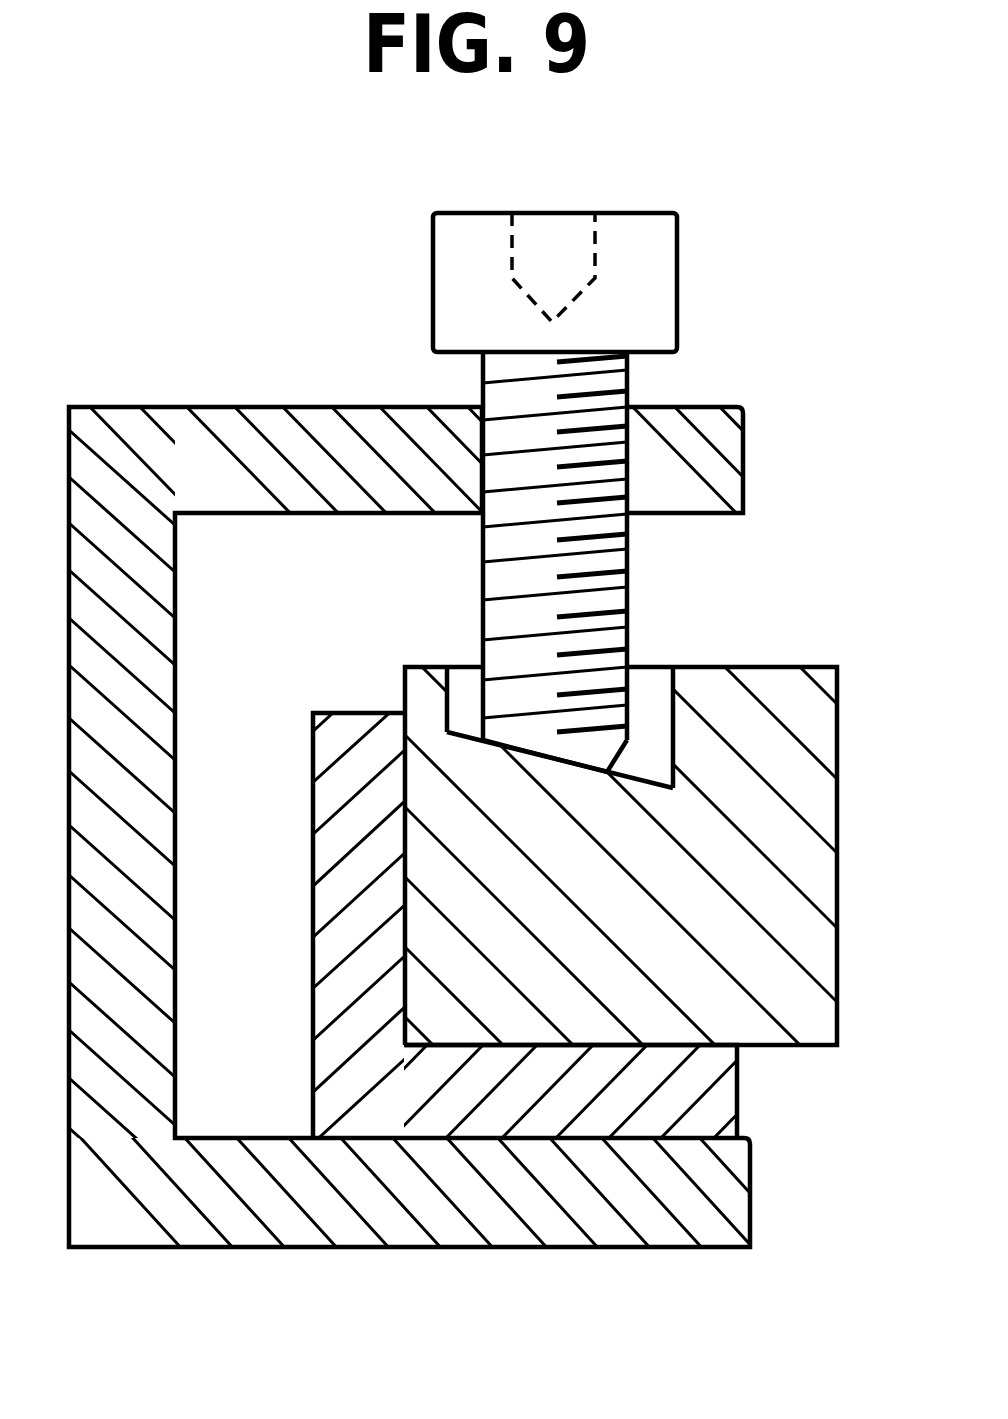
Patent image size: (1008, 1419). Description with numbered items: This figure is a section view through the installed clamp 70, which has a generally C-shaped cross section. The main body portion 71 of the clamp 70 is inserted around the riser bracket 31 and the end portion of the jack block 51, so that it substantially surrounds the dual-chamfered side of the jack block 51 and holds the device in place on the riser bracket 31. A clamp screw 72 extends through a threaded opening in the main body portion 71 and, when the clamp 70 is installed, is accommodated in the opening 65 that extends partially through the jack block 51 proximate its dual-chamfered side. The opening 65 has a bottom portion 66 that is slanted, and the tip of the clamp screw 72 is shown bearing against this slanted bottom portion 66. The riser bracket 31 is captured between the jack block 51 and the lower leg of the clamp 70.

The clamp 70 is at (230, 362).
The main body portion 71 is at (748, 425).
The clamp screw 72 is at (668, 212).
The jack block 51 is at (837, 888).
The opening 65 is at (655, 667).
The bottom portion 66 is at (610, 776).
The riser bracket 31 is at (737, 1097).